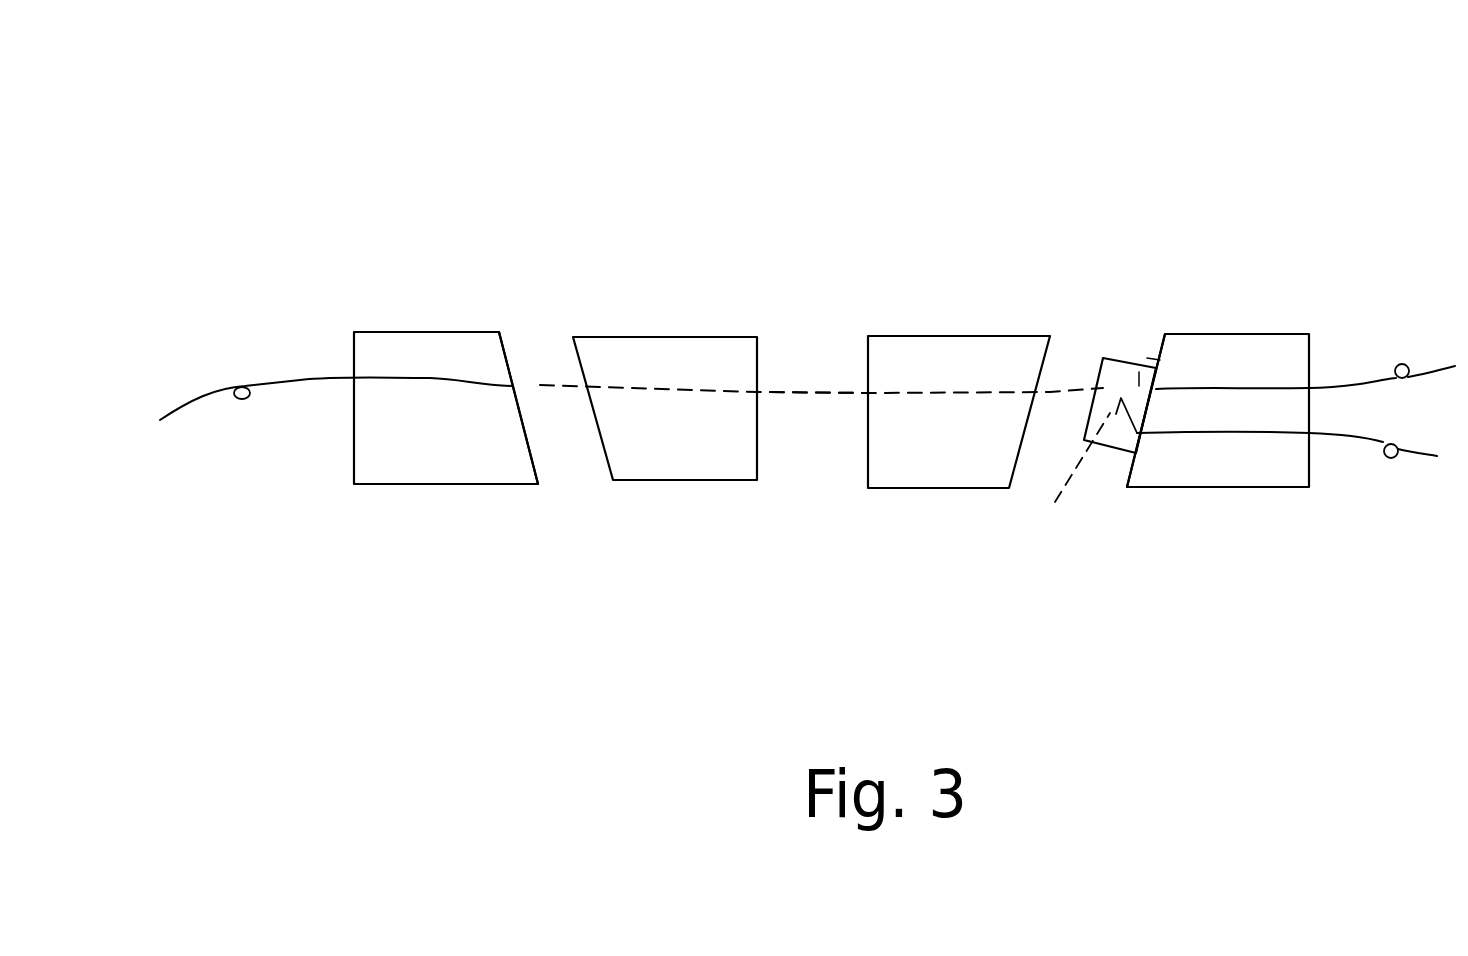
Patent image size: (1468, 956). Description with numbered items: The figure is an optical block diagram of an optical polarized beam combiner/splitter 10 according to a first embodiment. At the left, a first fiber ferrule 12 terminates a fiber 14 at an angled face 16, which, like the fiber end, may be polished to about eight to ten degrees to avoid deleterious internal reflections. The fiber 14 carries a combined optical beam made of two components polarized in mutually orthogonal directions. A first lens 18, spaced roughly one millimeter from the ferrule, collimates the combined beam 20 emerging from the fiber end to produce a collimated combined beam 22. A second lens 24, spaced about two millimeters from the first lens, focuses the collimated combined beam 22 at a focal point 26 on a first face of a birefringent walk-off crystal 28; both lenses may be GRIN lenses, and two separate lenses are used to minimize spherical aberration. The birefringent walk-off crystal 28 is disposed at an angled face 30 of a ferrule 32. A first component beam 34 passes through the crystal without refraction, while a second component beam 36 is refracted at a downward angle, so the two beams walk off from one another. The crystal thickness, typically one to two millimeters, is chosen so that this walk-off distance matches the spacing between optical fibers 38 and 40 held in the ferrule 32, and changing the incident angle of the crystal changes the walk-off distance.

The optical polarized beam combiner/splitter 10 is at (918, 142).
The first fiber ferrule 12 is at (428, 485).
The fiber 14 is at (208, 388).
The angled face 16 is at (505, 340).
The first lens 18 is at (663, 335).
The combined beam 20 is at (542, 385).
The collimated combined beam 22 is at (830, 393).
The second lens 24 is at (925, 490).
The focal point 26 is at (1098, 378).
The birefringent walk-off crystal 28 is at (1147, 358).
The angled face 30 is at (1127, 475).
The ferrule 32 is at (1268, 333).
The first component beam 34 is at (1139, 385).
The second component beam 36 is at (1075, 471).
The optical fiber 38 is at (1353, 383).
The optical fiber 40 is at (1350, 440).